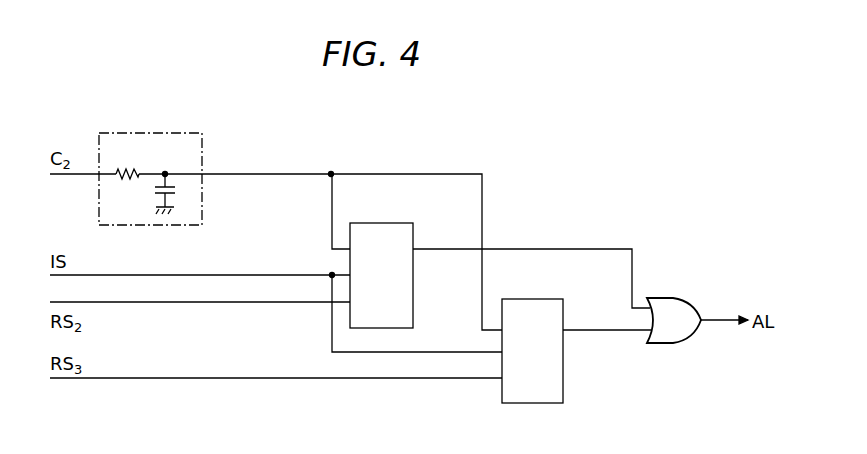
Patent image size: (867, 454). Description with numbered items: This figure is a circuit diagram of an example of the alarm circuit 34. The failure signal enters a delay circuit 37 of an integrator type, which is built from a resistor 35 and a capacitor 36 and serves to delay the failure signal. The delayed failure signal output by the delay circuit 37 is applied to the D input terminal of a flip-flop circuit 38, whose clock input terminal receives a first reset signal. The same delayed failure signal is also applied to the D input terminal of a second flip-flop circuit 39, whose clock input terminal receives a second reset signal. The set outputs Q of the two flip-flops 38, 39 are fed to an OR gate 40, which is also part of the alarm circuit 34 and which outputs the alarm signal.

The alarm circuit 34 is at (419, 160).
The resistor 35 is at (125, 177).
The capacitor 36 is at (176, 189).
The delay circuit 37 is at (157, 133).
The flip-flop circuit 38 is at (377, 222).
The flip-flop circuit 39 is at (524, 299).
The OR gate 40 is at (667, 296).